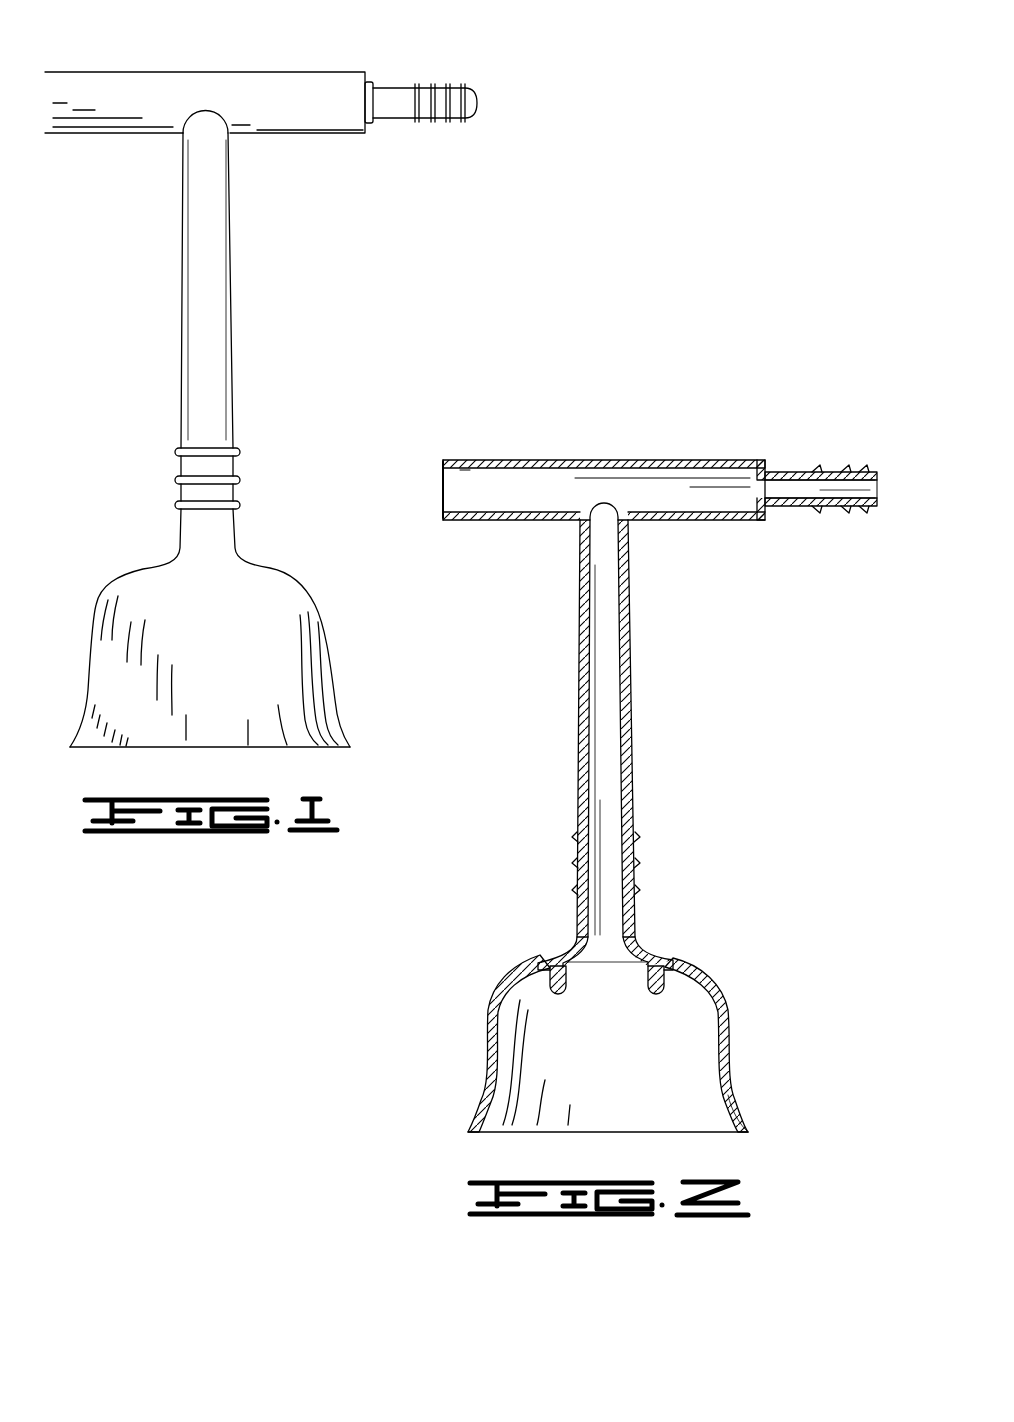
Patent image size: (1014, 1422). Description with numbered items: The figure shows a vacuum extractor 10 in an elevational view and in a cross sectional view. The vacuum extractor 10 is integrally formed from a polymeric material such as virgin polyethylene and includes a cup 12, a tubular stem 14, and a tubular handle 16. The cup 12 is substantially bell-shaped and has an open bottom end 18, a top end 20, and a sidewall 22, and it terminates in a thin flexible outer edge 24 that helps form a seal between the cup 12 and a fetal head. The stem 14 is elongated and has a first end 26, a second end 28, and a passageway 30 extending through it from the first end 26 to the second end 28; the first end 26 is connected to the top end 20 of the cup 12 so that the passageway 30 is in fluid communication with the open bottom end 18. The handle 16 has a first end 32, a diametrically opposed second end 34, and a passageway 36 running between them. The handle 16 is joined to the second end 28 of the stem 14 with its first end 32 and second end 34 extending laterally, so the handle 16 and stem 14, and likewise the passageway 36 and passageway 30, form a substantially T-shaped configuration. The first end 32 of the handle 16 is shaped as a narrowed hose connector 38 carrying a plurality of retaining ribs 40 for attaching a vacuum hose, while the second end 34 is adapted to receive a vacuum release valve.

In FIG. 1, the vacuum extractor 10 is at (229, 71).
In FIG. 2, the vacuum extractor 10 is at (628, 450).
In FIG. 1, the cup 12 is at (90, 626).
In FIG. 2, the cup 12 is at (488, 1029).
In FIG. 1, the tubular stem 14 is at (232, 277).
In FIG. 2, the tubular stem 14 is at (633, 722).
In FIG. 1, the tubular handle 16 is at (148, 72).
In FIG. 2, the tubular handle 16 is at (557, 460).
In FIG. 2, the open bottom end 18 is at (520, 1133).
In FIG. 2, the top end 20 is at (673, 957).
In FIG. 2, the sidewall 22 is at (734, 1020).
In FIG. 2, the thin flexible outer edge 24 is at (749, 1132).
In FIG. 2, the first end 26 is at (577, 931).
In FIG. 2, the second end 28 is at (580, 521).
In FIG. 2, the passageway 30 is at (584, 783).
In FIG. 2, the first end 32 is at (763, 462).
In FIG. 2, the second end 34 is at (450, 460).
In FIG. 2, the passageway 36 is at (673, 503).
In FIG. 2, the narrowed hose connector 38 is at (822, 505).
In FIG. 2, the retaining ribs 40 is at (833, 470).